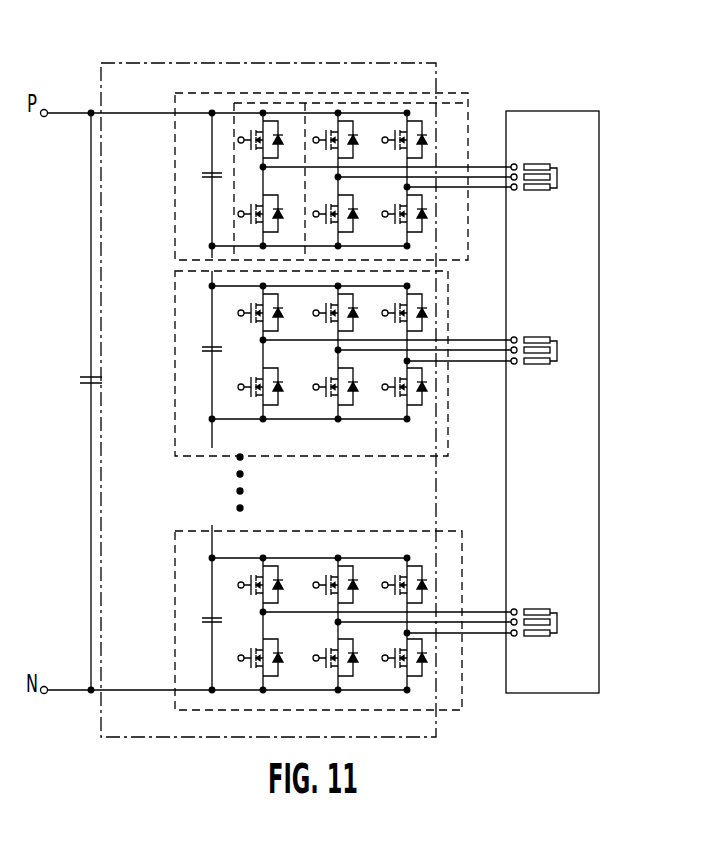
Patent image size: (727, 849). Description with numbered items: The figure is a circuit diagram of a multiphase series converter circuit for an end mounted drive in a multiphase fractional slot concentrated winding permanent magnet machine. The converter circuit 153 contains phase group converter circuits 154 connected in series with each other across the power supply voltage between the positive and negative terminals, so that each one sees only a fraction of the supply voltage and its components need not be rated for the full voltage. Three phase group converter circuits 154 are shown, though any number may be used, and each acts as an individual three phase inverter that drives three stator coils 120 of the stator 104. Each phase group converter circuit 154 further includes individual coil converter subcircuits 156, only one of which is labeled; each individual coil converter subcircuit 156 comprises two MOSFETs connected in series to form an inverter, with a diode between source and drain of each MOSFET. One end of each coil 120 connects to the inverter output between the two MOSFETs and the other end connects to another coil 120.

The stator 104 is at (599, 152).
The stator coil 120 is at (543, 165).
The converter circuit 153 is at (249, 62).
The phase group converter circuit 154 is at (468, 110).
The individual coil converter subcircuit 156 is at (295, 103).